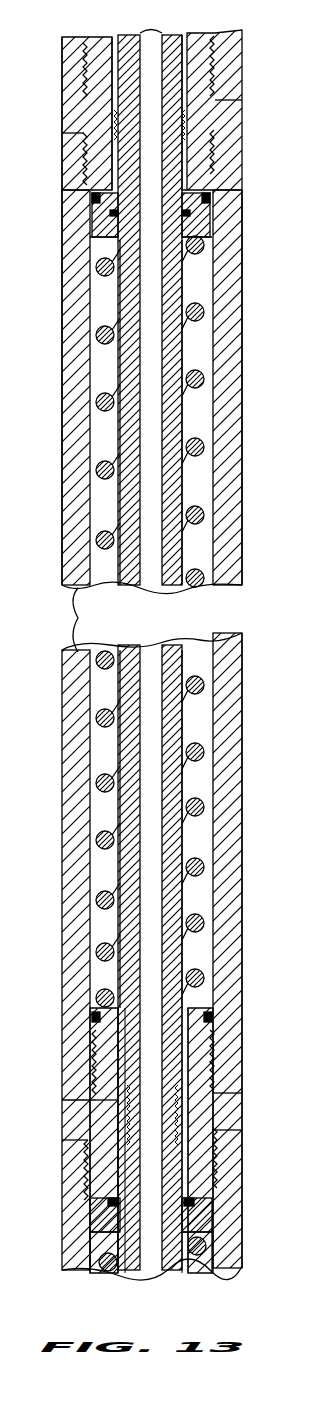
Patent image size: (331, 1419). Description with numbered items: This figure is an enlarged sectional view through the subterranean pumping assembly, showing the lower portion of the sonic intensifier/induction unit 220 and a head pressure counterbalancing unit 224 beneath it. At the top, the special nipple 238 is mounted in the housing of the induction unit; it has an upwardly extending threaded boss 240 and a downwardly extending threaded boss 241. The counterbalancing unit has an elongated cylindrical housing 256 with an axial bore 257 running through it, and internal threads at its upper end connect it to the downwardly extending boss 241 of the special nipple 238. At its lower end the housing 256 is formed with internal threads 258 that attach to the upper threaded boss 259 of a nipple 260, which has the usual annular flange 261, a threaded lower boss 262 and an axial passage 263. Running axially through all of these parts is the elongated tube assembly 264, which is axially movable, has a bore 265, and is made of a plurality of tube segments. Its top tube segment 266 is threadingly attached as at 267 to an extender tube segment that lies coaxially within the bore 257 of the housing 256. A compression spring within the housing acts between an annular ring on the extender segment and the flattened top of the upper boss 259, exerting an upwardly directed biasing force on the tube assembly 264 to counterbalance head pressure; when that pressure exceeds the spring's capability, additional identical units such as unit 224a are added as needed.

The sonic intensifier/induction unit 220 is at (246, 64).
The head pressure counterbalancing unit 224 is at (246, 468).
The additional head pressure counterbalancing unit 224a is at (246, 1205).
The special nipple 238 is at (60, 110).
The upwardly extending threaded boss 240 is at (98, 70).
The downwardly extending threaded boss 241 is at (205, 160).
The elongated cylindrical housing 256 is at (55, 624).
The axial bore 257 is at (92, 443).
The internal threads 258 is at (92, 1042).
The upper threaded boss 259 is at (100, 1074).
The nipple 260 is at (62, 1110).
The annular flange 261 is at (222, 1112).
The threaded lower boss 262 is at (200, 1158).
The axial passage 263 is at (188, 1062).
The elongated tube assembly 264 is at (190, 633).
The bore 265 is at (110, 503).
The top tube segment 266 is at (134, 50).
The threaded attachment 267 is at (128, 128).